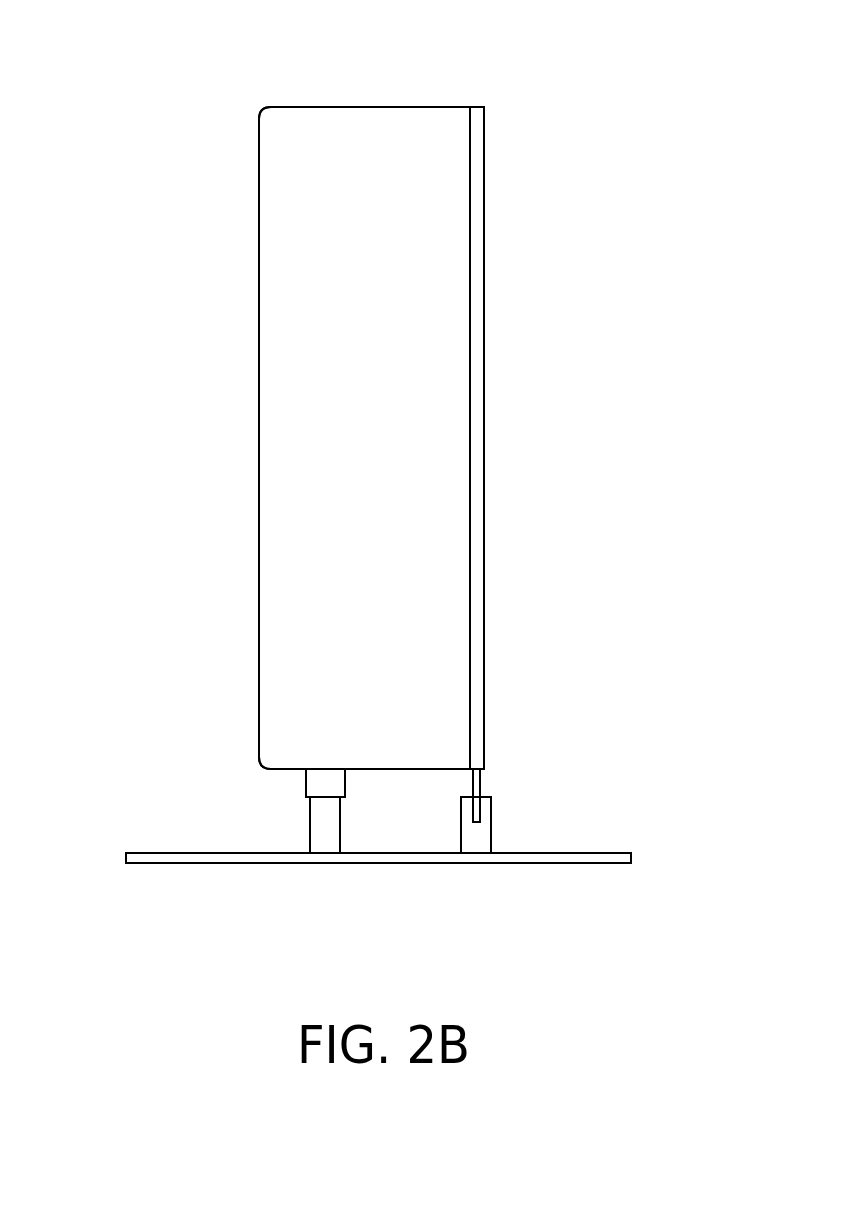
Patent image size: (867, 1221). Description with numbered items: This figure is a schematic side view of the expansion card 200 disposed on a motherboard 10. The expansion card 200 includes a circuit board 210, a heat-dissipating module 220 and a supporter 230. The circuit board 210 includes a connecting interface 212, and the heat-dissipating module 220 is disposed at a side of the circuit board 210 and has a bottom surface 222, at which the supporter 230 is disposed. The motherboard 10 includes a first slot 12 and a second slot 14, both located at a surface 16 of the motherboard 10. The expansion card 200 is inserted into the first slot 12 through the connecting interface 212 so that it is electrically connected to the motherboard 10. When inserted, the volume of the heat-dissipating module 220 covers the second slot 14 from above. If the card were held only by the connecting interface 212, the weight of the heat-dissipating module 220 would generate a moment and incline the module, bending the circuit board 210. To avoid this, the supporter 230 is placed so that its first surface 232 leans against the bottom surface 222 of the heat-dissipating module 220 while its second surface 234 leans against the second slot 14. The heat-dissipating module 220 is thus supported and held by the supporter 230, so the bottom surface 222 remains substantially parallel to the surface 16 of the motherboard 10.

The expansion card 200 is at (124, 58).
The circuit board 210 is at (479, 163).
The connecting interface 212 is at (477, 798).
The heat-dissipating module 220 is at (276, 187).
The bottom surface 222 is at (412, 769).
The supporter 230 is at (170, 745).
The first surface 232 is at (327, 769).
The second surface 234 is at (317, 797).
The motherboard 10 is at (632, 858).
The first slot 12 is at (485, 830).
The second slot 14 is at (327, 833).
The surface 16 is at (590, 853).